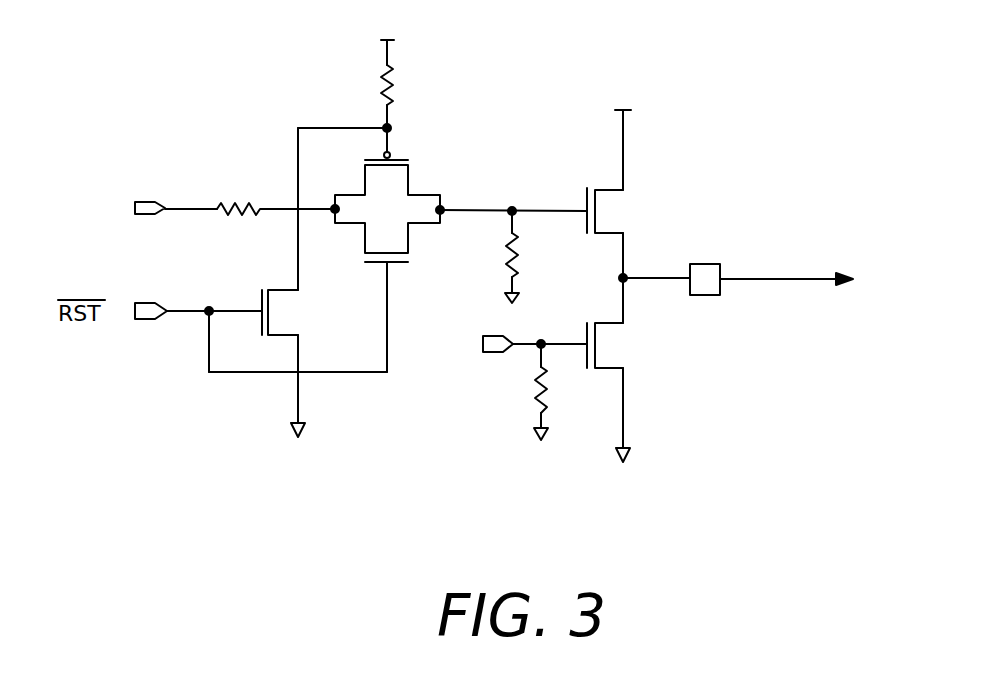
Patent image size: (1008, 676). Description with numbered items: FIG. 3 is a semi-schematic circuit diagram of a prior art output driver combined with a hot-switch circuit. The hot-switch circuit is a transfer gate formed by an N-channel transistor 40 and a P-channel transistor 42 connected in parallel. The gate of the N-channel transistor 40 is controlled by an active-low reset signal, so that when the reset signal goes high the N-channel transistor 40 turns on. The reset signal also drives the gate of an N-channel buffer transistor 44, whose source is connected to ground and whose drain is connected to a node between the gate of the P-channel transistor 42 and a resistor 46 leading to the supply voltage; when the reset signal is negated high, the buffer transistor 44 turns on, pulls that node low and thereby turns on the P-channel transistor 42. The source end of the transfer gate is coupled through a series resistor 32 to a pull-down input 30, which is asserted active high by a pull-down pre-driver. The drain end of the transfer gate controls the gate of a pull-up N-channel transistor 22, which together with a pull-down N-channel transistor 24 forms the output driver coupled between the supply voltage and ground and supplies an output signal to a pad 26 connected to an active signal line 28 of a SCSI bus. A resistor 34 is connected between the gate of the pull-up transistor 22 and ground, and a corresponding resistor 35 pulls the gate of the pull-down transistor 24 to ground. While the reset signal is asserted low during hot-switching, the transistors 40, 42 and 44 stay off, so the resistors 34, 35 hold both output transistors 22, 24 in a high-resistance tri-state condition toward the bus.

The pull-down input 30 is at (140, 204).
The series resistor 32 is at (243, 201).
The resistor 46 is at (383, 80).
The P-channel transistor 42 is at (400, 180).
The N-channel transistor 40 is at (398, 240).
The N-channel buffer transistor 44 is at (283, 318).
The resistor 34 is at (523, 255).
The resistor 35 is at (553, 383).
The pull-up N-channel transistor 22 is at (608, 210).
The pull-down N-channel transistor 24 is at (616, 344).
The pad 26 is at (708, 270).
The active signal line 28 is at (818, 277).